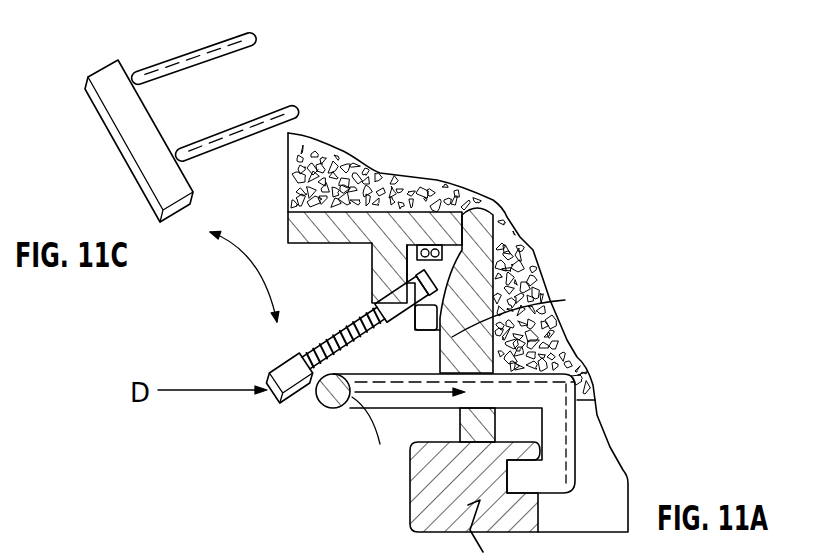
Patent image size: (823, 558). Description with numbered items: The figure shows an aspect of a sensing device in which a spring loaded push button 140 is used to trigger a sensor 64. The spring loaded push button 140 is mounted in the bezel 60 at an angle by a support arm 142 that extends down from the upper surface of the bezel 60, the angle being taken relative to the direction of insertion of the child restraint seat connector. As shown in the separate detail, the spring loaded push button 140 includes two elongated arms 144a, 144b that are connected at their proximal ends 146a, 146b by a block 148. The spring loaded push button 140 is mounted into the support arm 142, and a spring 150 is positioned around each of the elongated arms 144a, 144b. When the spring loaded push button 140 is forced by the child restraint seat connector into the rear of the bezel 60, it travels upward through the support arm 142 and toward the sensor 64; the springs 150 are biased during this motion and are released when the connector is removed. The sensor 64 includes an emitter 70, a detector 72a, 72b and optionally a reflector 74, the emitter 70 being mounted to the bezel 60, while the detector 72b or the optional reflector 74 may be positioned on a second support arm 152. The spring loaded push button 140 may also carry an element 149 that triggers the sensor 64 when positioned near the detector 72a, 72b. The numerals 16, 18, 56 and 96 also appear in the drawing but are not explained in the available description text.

In FIG. 11A, the vehicle body component 16 is at (515, 433).
In FIG. 11A, the body panel 18 is at (563, 438).
In FIG. 11A, the assembly 56 is at (538, 95).
In FIG. 11A, the bezel 60 is at (485, 363).
In FIG. 11A, the sensor 64 is at (447, 250).
In FIG. 11A, the emitter 70 is at (494, 260).
In FIG. 11A, the detector 72a is at (427, 243).
In FIG. 11A, the detector 72b is at (445, 326).
In FIG. 11A, the reflector 74 is at (516, 287).
In FIG. 11A, the foam layer 96 is at (450, 251).
In FIG. 11C, the spring loaded push button 140 is at (203, 117).
In FIG. 11A, the spring loaded push button 140 is at (323, 369).
In FIG. 11A, the support arm 142 is at (383, 277).
In FIG. 11C, the elongated arm 144a is at (235, 49).
In FIG. 11C, the elongated arm 144b is at (278, 123).
In FIG. 11C, the proximal end 146a is at (148, 81).
In FIG. 11C, the proximal end 146b is at (187, 162).
In FIG. 11C, the block 148 is at (150, 168).
In FIG. 11A, the block 148 is at (297, 393).
In FIG. 11A, the element 149 is at (506, 436).
In FIG. 11A, the spring 150 is at (323, 369).
In FIG. 11A, the second support arm 152 is at (527, 309).